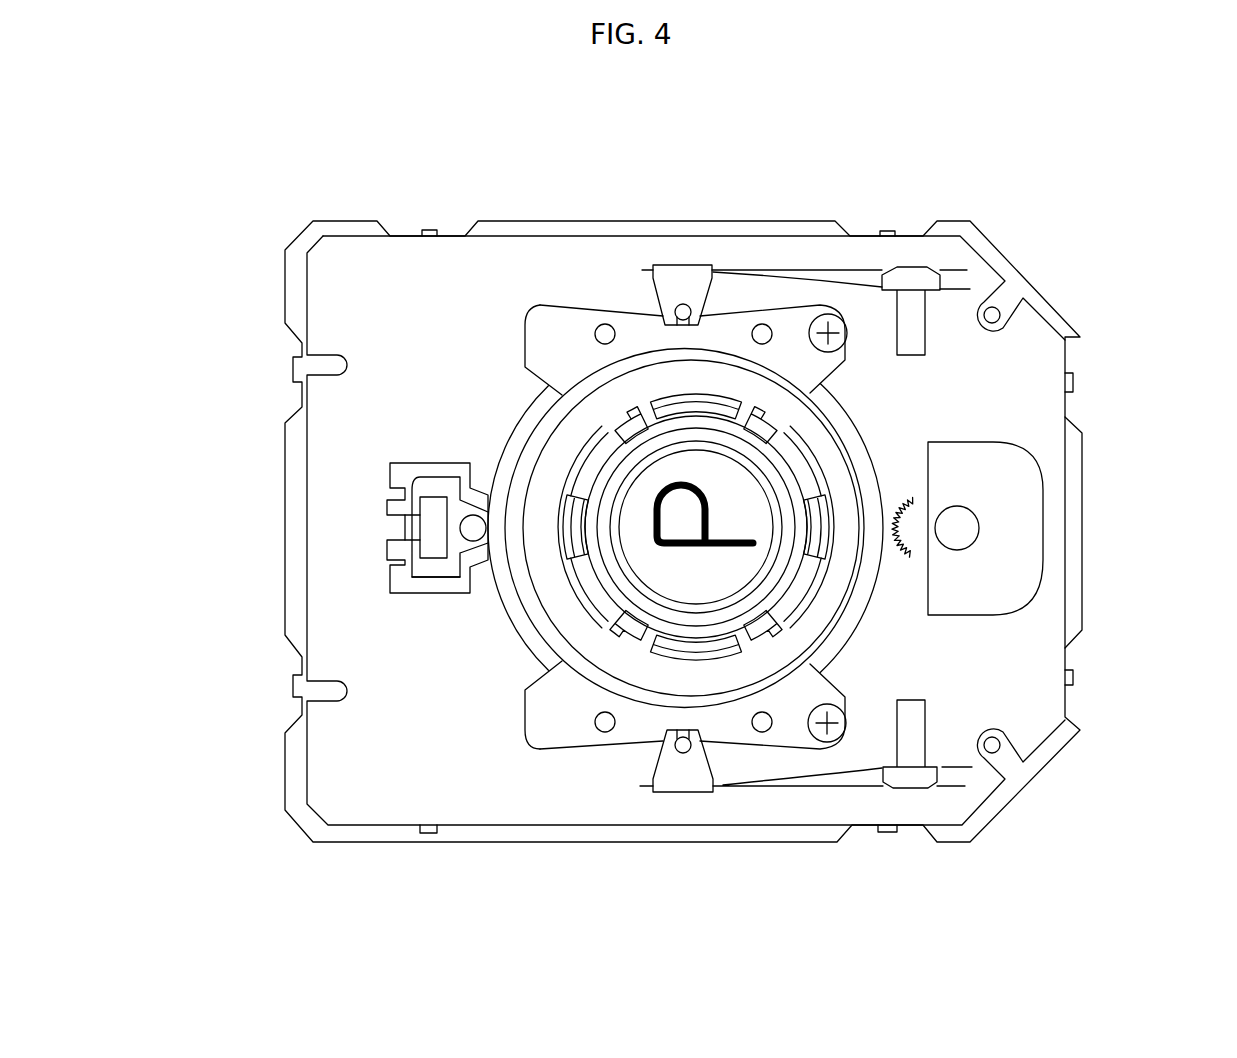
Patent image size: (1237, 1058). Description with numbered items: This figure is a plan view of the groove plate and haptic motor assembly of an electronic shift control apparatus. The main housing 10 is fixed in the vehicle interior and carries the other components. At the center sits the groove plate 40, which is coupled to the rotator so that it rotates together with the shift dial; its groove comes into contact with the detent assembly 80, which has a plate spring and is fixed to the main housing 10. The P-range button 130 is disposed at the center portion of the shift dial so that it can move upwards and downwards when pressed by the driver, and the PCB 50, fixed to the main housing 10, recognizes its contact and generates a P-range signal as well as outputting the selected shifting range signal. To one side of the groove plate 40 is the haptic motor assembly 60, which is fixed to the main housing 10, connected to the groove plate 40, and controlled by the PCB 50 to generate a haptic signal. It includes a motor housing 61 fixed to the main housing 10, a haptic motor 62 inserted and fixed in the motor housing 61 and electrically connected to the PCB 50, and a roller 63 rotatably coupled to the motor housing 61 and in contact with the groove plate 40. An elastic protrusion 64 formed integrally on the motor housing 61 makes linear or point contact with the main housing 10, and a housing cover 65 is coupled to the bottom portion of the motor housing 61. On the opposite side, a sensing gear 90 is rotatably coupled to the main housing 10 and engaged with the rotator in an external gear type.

The main housing 10 is at (992, 258).
The groove plate 40 is at (530, 420).
The Printed Circuit Board (PCB) 50 is at (1032, 662).
The haptic motor assembly 60 is at (388, 585).
The motor housing 61 is at (434, 483).
The haptic motor 62 is at (430, 507).
The roller 63 is at (474, 541).
The elastic protrusion 64 is at (395, 548).
The housing cover 65 is at (438, 587).
The detent assembly 80 is at (815, 290).
The sensing gear 90 is at (918, 528).
The P-range button 130 is at (737, 507).